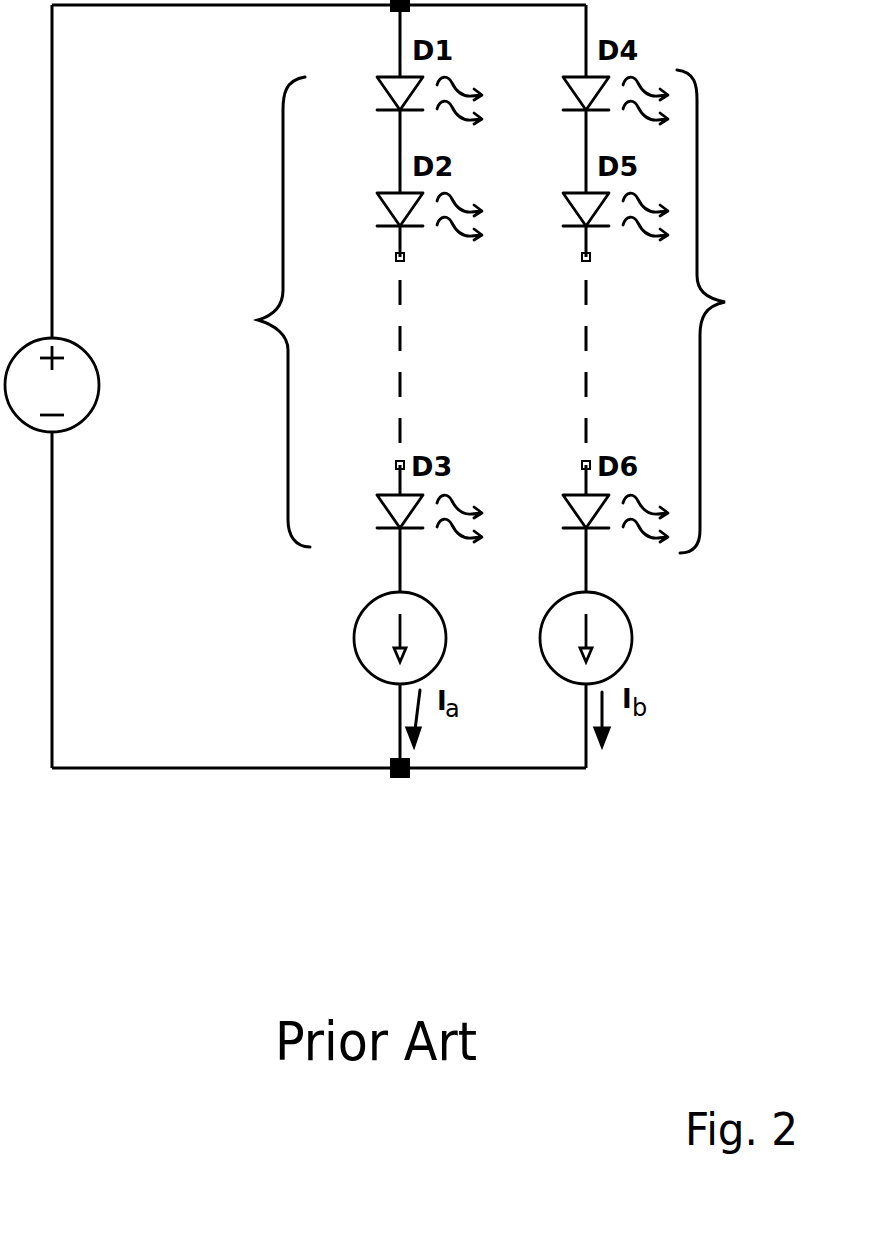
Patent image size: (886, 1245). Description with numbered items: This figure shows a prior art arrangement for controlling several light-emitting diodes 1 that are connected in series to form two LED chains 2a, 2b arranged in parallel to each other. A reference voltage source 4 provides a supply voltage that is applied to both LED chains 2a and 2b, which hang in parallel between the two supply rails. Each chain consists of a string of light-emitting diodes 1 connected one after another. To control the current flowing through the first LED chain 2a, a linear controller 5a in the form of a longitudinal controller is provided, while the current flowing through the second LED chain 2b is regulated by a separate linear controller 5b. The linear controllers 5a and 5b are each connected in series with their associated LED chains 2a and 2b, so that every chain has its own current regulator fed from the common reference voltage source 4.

The light-emitting diode 1 is at (490, 311).
The LED chain 2a is at (259, 312).
The LED chain 2b is at (731, 311).
The reference voltage source 4 is at (77, 388).
The linear controller 5a is at (373, 641).
The linear controller 5b is at (613, 647).